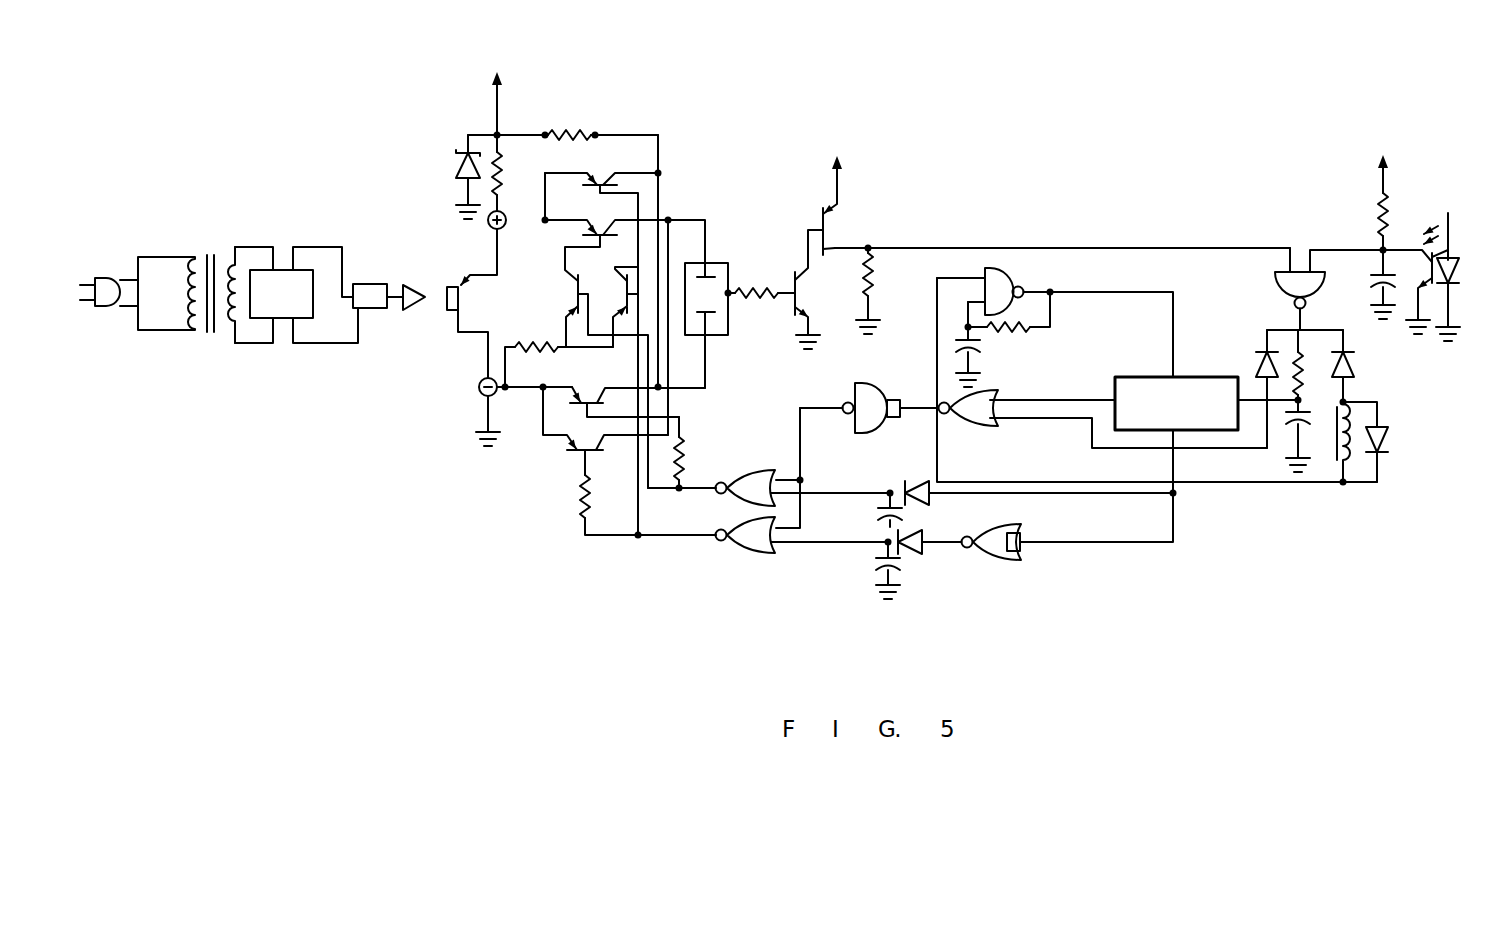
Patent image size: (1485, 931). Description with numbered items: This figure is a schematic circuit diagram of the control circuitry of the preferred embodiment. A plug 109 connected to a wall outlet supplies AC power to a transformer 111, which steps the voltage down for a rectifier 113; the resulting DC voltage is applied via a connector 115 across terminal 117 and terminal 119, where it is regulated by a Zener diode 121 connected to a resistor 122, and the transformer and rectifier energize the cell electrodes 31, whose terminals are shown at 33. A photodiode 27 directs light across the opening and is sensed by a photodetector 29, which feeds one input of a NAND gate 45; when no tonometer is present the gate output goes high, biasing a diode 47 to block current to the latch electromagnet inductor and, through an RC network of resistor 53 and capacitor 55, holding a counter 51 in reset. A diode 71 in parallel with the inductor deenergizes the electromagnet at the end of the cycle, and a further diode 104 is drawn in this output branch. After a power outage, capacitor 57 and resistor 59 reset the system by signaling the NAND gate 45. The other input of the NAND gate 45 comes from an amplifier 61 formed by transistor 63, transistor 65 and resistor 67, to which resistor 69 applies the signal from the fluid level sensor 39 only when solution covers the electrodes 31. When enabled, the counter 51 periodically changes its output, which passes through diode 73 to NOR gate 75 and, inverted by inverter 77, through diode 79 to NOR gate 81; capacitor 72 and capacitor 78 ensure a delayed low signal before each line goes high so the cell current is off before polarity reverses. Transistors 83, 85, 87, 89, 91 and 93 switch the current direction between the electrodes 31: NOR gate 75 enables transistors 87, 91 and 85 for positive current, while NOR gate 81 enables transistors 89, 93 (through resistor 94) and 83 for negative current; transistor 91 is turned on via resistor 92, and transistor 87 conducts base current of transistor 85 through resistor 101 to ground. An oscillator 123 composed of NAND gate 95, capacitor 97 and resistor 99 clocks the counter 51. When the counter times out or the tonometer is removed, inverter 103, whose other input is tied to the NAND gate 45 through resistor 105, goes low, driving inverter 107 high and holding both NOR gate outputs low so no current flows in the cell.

The photodiode 27 is at (1458, 258).
The photodetector 29 is at (1440, 288).
The electrodes 31 is at (710, 277).
The terminals 33 is at (543, 132).
The fluid level sensor 39 is at (735, 300).
The NAND gate 45 is at (1298, 268).
The diode 47 is at (1352, 362).
The counter 51 is at (1148, 377).
The resistor 53 is at (1307, 365).
The capacitor 55 is at (1290, 445).
The capacitor 57 is at (1372, 273).
The resistor 59 is at (1385, 205).
The amplifier 61 is at (806, 212).
The transistor 63 is at (796, 283).
The transistor 65 is at (840, 185).
The resistor 67 is at (875, 262).
The resistor 69 is at (752, 290).
The diode 71 is at (1385, 443).
The capacitor 72 is at (880, 510).
The diode 73 is at (918, 487).
The NOR gate 75 is at (748, 470).
The inverter 77 is at (1000, 558).
The capacitor 78 is at (878, 566).
The diode 79 is at (922, 552).
The NOR gate 81 is at (760, 553).
The transistor 83 is at (607, 170).
The transistor 85 is at (583, 236).
The transistor 87 is at (572, 284).
The transistor 89 is at (618, 316).
The transistor 91 is at (593, 398).
The resistor 92 is at (688, 440).
The transistor 93 is at (570, 452).
The resistor 94 is at (578, 497).
The NAND gate 95 is at (990, 266).
The capacitor 97 is at (953, 343).
The resistor 99 is at (1005, 330).
The resistor 101 is at (483, 360).
The inverter 103 is at (968, 428).
The diode 104 is at (1258, 367).
The resistor 105 is at (578, 128).
The inverter 107 is at (855, 385).
The plug 109 is at (142, 332).
The transformer 111 is at (210, 253).
The rectifier 113 is at (283, 258).
The connector 115 is at (412, 307).
The terminal 117 is at (480, 223).
The terminal 119 is at (482, 392).
The Zener diode 121 is at (455, 165).
The resistor 122 is at (500, 170).
The oscillator 123 is at (1030, 265).